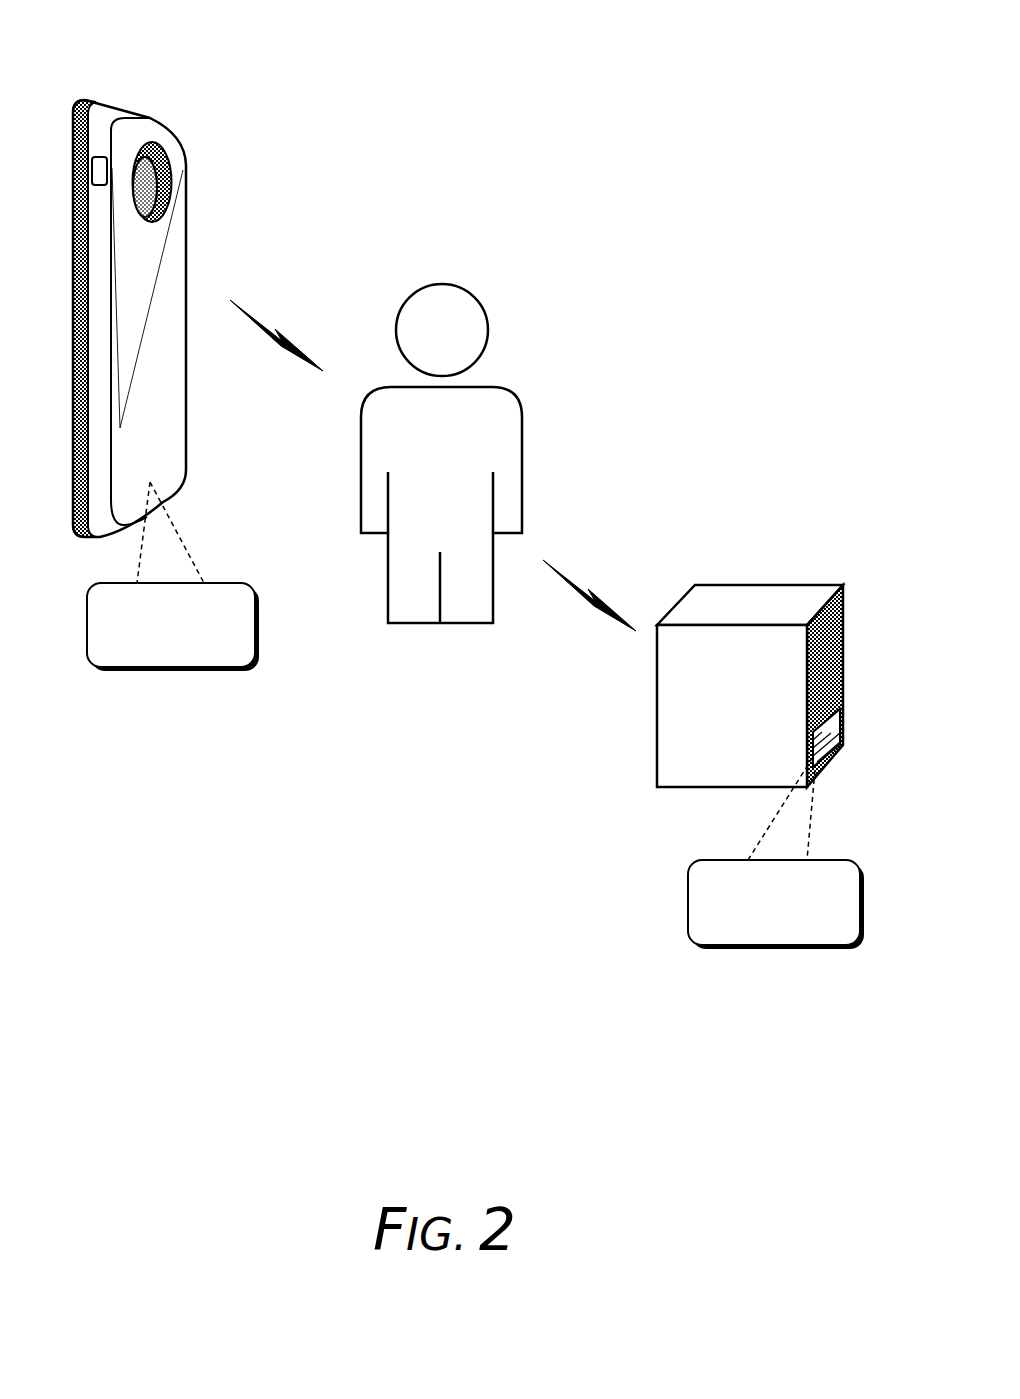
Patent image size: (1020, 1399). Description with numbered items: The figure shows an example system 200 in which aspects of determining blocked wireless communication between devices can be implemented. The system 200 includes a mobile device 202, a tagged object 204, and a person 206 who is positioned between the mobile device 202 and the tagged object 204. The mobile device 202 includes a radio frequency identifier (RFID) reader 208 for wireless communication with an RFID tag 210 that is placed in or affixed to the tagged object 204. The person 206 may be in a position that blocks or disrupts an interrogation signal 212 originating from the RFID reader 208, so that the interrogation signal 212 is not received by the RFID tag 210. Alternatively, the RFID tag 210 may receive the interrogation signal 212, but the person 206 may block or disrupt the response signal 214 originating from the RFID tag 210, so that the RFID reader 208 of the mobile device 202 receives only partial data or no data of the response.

The example system 200 is at (603, 56).
The mobile device 202 is at (207, 463).
The tagged object 204 is at (713, 741).
The person 206 is at (421, 680).
The radio frequency identifier (RFID) reader 208 is at (153, 643).
The RFID tag 210 is at (755, 921).
The interrogation signal 212 is at (278, 332).
The response signal 214 is at (598, 593).